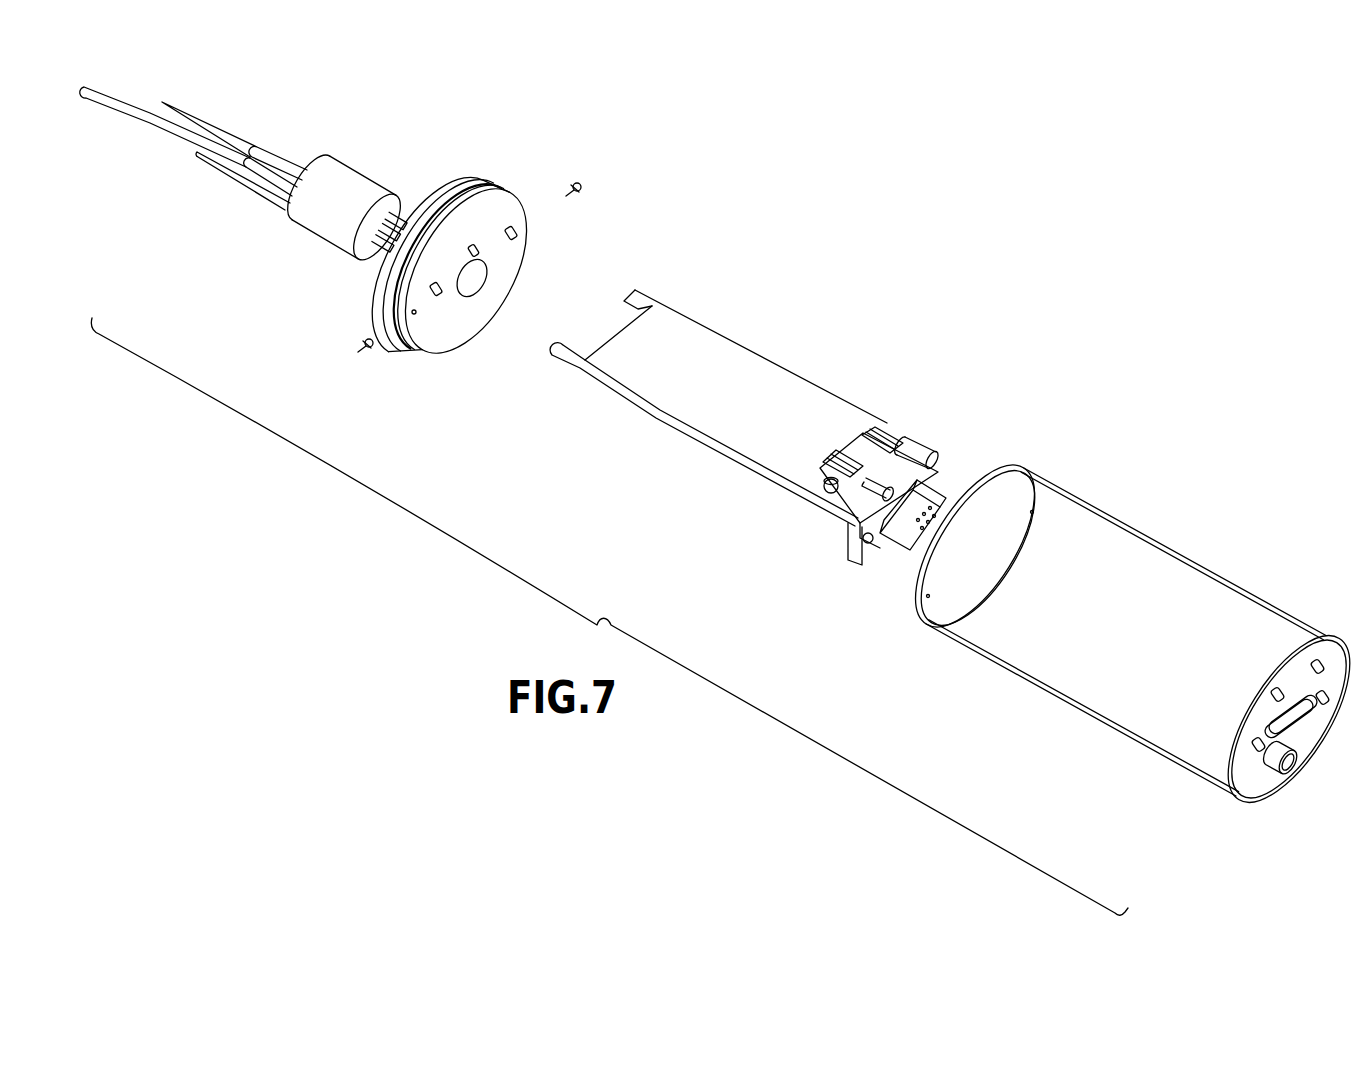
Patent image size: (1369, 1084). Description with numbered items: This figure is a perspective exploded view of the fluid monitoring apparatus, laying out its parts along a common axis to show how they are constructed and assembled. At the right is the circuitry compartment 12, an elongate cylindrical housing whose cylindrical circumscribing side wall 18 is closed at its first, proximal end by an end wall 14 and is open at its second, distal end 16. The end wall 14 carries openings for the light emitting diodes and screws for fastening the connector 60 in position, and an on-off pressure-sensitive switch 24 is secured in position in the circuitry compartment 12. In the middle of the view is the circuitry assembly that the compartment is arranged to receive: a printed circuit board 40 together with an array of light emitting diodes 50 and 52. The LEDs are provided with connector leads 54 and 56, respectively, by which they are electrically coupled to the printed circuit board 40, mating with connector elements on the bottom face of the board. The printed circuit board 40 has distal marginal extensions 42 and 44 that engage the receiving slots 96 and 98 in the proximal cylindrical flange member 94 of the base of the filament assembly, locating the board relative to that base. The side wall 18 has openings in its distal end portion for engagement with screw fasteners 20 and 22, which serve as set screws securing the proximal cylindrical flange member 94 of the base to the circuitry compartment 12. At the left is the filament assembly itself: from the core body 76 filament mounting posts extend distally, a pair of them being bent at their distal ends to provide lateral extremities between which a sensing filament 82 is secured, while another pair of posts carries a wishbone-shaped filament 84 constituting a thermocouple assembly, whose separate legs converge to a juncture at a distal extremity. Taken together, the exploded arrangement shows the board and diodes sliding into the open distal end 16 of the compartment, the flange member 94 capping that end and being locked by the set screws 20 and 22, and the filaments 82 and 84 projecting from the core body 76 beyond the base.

The circuitry compartment 12 is at (1010, 678).
The end wall 14 is at (1318, 632).
The second (distal) end 16 is at (997, 448).
The side wall 18 is at (1138, 540).
The screw fastener 20 is at (360, 350).
The screw fastener 22 is at (583, 188).
The on-off pressure-sensitive switch 24 is at (1291, 772).
The printed circuit board 40 is at (751, 360).
The distal marginal extension 42 is at (641, 290).
The distal marginal extension 44 is at (557, 346).
The light emitting diode 50 is at (832, 500).
The light emitting diode 52 is at (916, 452).
The connector lead 54 is at (820, 470).
The connector lead 56 is at (881, 430).
The connector 60 is at (872, 548).
The core body 76 is at (323, 237).
The sensing filament 82 is at (143, 122).
The wishbone-shaped filament 84 is at (223, 127).
The proximal cylindrical flange member 94 is at (470, 330).
The receiving slot 96 is at (520, 237).
The receiving slot 98 is at (436, 297).